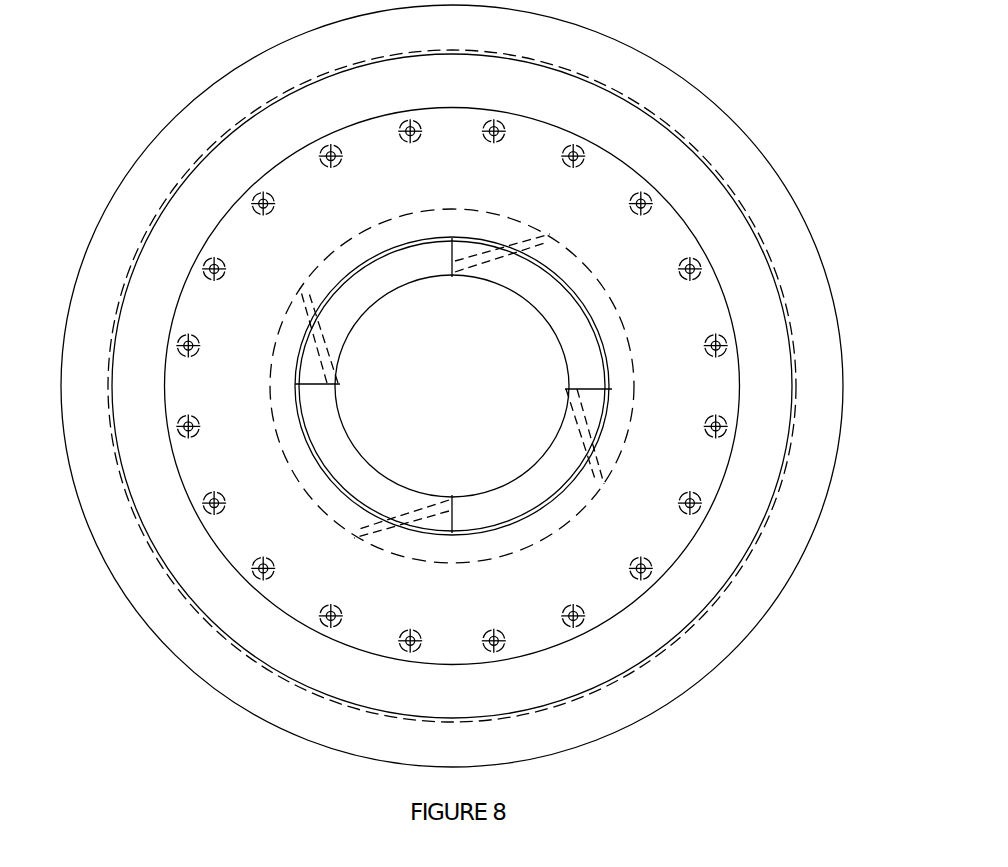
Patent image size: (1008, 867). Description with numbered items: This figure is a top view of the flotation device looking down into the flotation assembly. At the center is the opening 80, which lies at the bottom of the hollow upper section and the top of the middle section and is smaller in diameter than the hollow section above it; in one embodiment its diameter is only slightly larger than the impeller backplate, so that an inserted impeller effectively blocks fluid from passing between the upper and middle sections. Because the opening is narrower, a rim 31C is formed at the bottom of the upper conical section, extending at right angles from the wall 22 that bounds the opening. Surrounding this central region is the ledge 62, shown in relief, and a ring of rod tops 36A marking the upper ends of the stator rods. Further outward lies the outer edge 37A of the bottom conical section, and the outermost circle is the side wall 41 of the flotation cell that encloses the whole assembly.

The side wall 41 is at (787, 192).
The outer edge of bottom conical section 37A is at (795, 436).
The rim 31C is at (383, 283).
The top of stator rods 36A is at (336, 610).
The ledge 62 is at (628, 350).
The wall 22 is at (573, 310).
The opening 80 is at (470, 392).